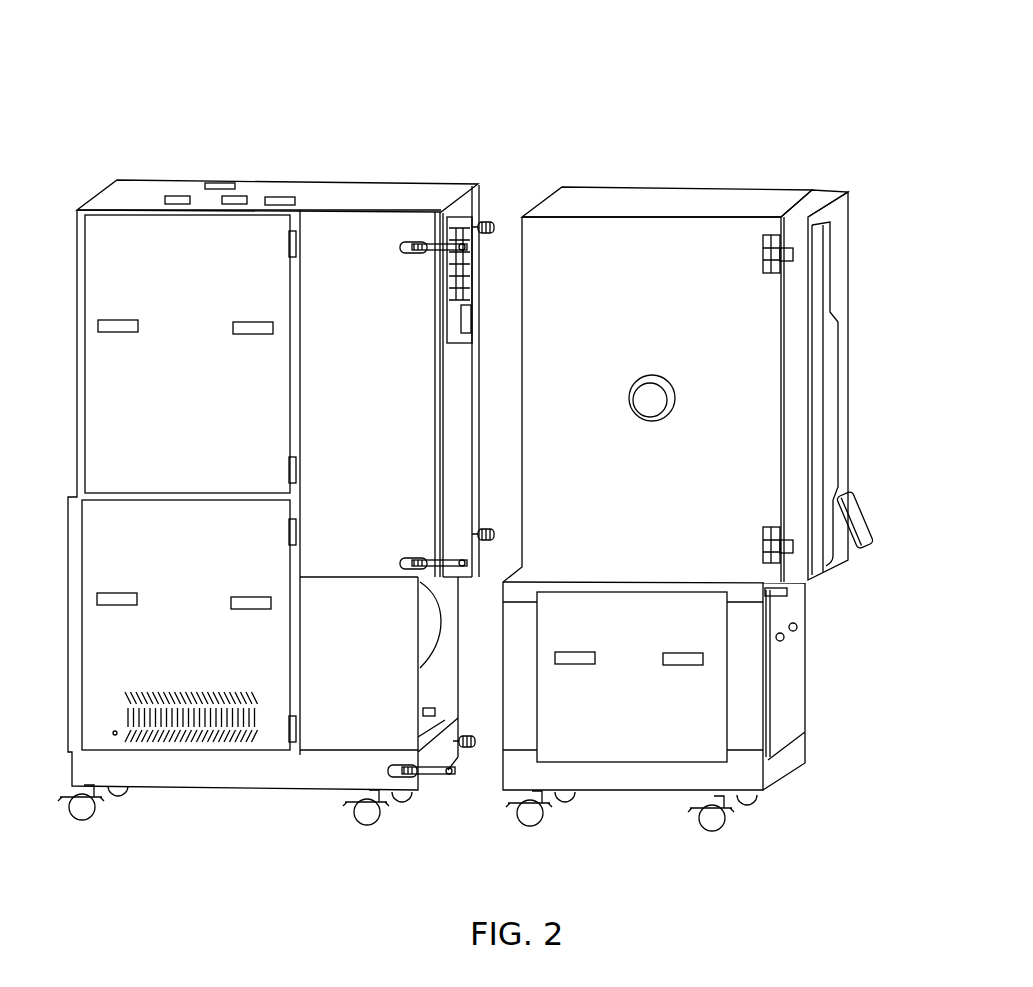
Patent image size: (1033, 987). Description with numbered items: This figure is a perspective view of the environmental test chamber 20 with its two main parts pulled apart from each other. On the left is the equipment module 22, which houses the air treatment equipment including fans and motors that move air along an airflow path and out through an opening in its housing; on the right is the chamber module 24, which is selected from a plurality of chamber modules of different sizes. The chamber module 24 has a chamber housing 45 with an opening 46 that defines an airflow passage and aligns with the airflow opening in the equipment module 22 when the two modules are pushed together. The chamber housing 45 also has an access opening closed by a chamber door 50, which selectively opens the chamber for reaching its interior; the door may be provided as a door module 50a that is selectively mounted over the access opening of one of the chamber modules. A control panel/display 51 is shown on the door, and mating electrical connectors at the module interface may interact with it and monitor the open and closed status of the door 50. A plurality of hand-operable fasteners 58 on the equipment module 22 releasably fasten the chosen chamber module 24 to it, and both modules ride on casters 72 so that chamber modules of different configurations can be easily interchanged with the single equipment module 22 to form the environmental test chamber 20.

The environmental test chamber 20 is at (652, 46).
The equipment module 22 is at (283, 190).
The chamber module 24 is at (740, 195).
The chamber housing 45 is at (538, 200).
The opening 46 is at (520, 272).
The chamber door 50 is at (850, 280).
The door module 50a is at (828, 197).
The control panel/display 51 is at (860, 517).
The fasteners 58 is at (405, 253).
The casters 72 is at (95, 817).